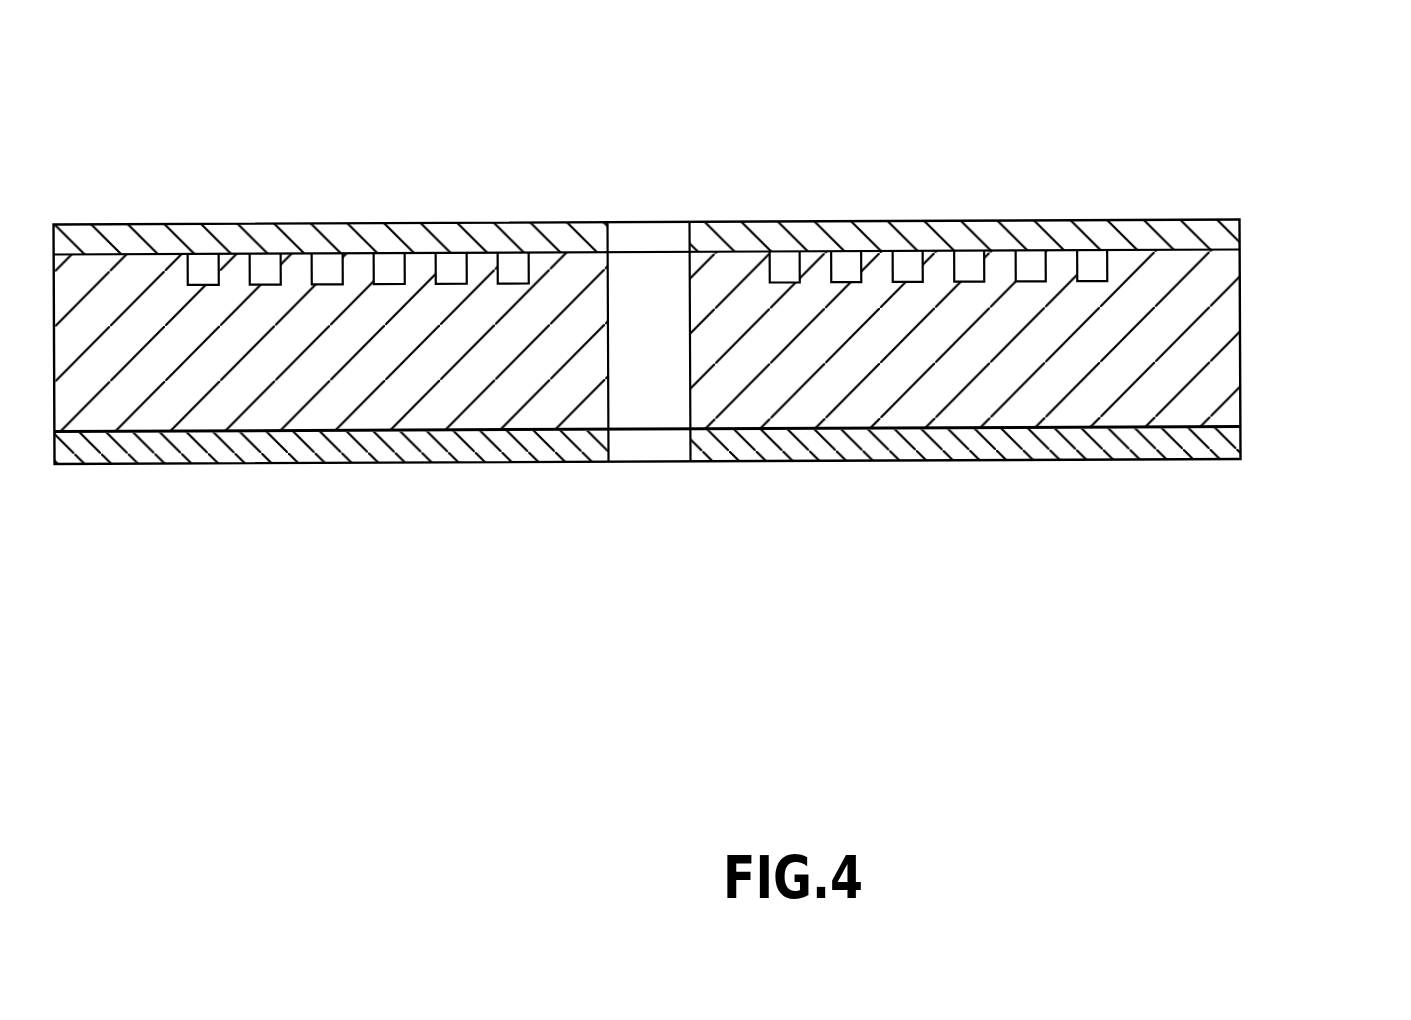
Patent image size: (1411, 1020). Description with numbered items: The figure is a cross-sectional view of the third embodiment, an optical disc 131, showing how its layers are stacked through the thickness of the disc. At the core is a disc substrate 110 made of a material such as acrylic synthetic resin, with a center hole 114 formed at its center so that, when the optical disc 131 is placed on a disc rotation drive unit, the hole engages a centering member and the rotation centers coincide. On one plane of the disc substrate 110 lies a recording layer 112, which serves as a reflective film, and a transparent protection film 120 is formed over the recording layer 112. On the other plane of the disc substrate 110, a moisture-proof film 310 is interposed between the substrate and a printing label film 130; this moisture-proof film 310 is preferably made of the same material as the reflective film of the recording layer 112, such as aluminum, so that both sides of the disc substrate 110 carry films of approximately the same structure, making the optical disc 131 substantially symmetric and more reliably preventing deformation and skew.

The optical disc 131 is at (1203, 108).
The transparent protection film 120 is at (1233, 233).
The disc substrate 110 is at (1233, 357).
The recording layer 112 is at (343, 253).
The center hole 114 is at (689, 305).
The moisture-proof film 310 is at (1172, 427).
The printing label film 130 is at (1233, 444).